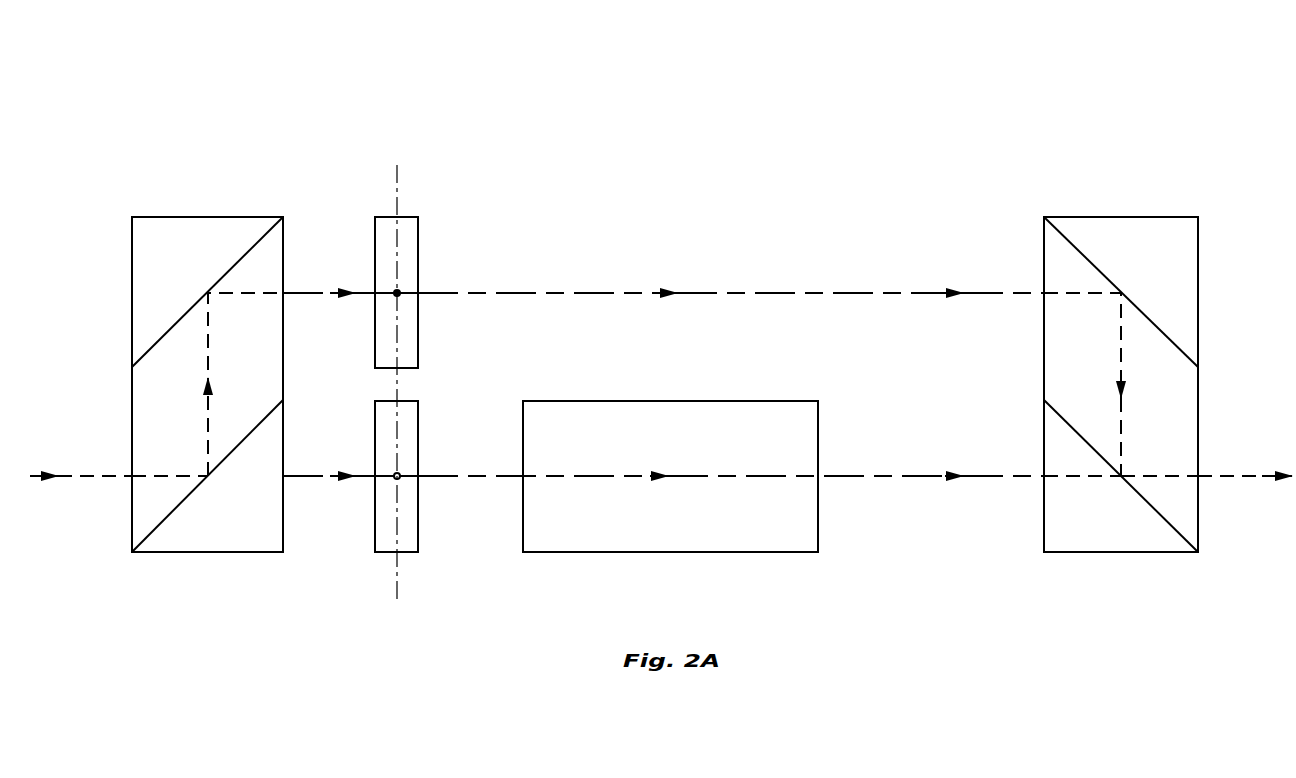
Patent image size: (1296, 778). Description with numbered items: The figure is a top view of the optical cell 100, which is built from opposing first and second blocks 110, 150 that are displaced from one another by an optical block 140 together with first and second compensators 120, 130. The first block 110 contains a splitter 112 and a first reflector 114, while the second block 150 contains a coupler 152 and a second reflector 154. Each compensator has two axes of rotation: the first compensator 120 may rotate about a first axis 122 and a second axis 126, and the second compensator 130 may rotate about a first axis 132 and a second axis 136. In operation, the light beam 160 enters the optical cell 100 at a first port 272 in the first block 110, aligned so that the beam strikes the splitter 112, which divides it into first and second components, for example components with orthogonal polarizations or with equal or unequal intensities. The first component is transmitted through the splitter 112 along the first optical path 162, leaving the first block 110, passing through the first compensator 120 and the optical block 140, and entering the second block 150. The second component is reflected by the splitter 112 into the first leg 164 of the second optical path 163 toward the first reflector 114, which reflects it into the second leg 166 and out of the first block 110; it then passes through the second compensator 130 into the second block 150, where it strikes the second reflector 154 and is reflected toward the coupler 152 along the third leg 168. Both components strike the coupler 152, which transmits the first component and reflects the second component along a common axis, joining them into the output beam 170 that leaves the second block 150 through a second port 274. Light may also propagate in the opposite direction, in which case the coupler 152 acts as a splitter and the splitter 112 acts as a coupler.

The optical cell 100 is at (310, 88).
The first block 110 is at (177, 366).
The splitter 112 is at (163, 518).
The first reflector 114 is at (168, 335).
The first compensator 120 is at (410, 496).
The first axis of rotation 122 is at (399, 478).
The second axis of rotation 126 is at (398, 598).
The second compensator 130 is at (410, 271).
The first axis of rotation 132 is at (398, 292).
The second axis of rotation 136 is at (398, 172).
The optical block 140 is at (703, 552).
The second block 150 is at (1159, 386).
The coupler 152 is at (1178, 535).
The second reflector 154 is at (1175, 343).
The light beam 160 is at (115, 478).
The first optical path 162 is at (868, 478).
The second optical path 163 is at (787, 293).
The first leg 164 is at (207, 318).
The second leg 166 is at (550, 293).
The third leg 168 is at (1122, 440).
The output beam 170 is at (1265, 480).
The first port 272 is at (131, 472).
The second port 274 is at (1198, 476).